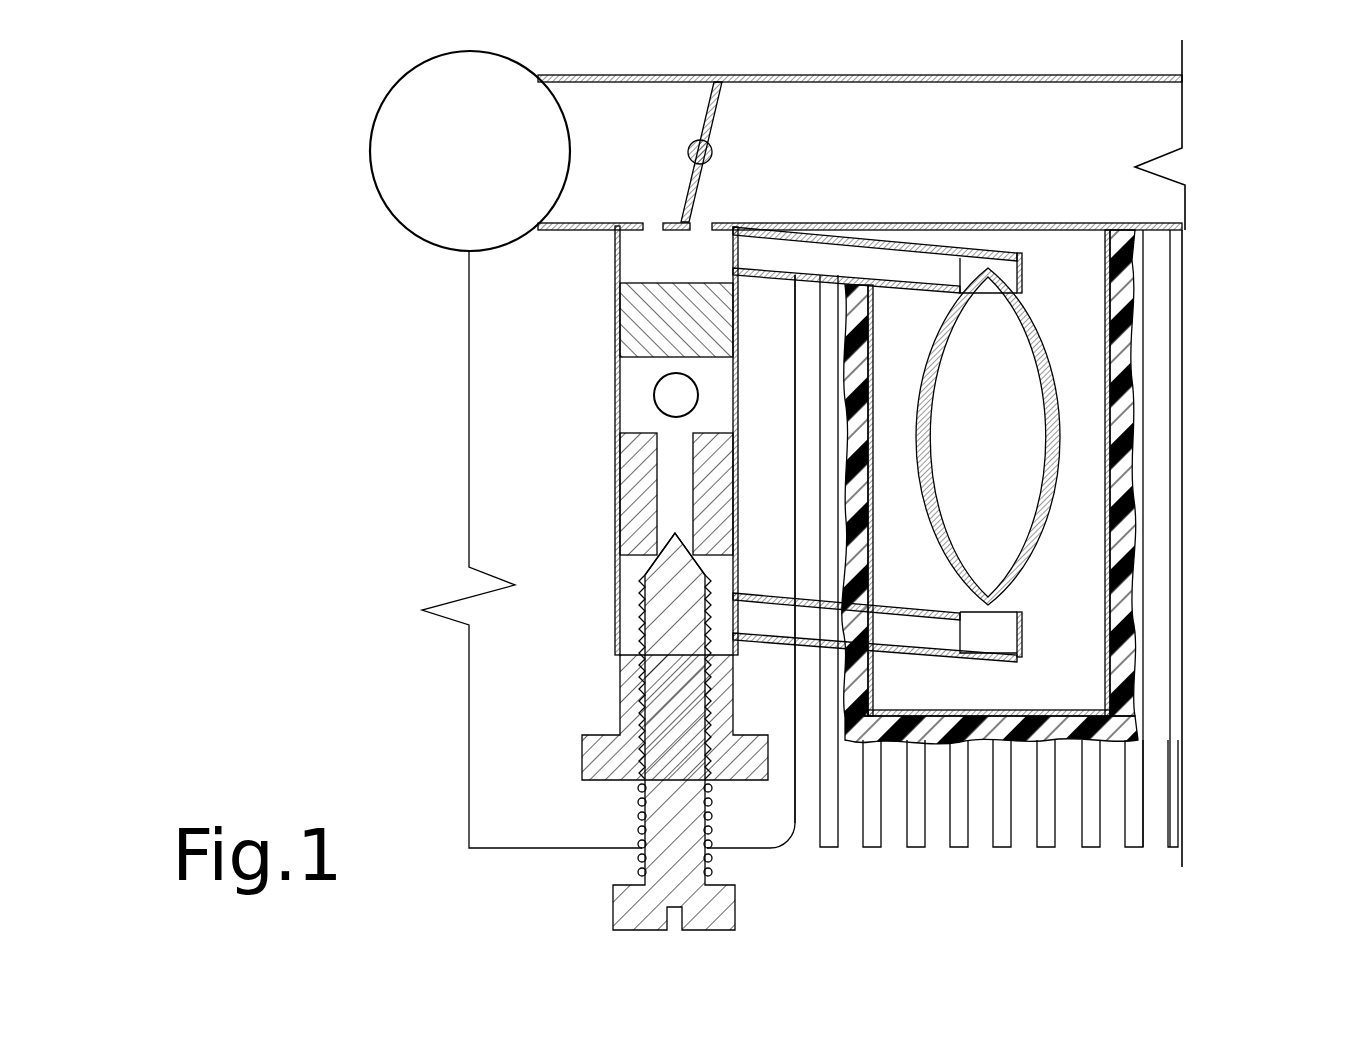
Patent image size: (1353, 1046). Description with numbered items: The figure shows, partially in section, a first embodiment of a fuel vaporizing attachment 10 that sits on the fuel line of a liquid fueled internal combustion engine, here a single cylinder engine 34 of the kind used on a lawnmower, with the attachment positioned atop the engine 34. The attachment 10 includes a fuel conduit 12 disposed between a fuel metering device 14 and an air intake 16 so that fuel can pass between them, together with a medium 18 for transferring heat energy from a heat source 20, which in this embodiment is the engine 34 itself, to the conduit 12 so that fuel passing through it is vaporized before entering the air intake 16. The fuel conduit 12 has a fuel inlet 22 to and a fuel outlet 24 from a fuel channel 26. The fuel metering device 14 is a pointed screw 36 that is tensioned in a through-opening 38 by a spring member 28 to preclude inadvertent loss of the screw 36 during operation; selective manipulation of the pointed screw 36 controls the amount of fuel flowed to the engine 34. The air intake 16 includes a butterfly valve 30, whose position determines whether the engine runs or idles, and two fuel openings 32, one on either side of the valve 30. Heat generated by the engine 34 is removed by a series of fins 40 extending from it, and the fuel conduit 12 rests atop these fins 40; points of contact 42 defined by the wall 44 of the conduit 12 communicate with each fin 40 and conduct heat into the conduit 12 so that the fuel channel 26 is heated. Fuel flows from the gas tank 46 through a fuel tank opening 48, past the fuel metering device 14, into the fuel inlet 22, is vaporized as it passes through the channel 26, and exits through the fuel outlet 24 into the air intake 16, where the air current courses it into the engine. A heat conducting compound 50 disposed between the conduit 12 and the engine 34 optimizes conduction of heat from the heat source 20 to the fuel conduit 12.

The fuel vaporizing attachment 10 is at (1243, 314).
The fuel conduit 12 is at (1093, 641).
The fuel metering device 14 is at (493, 700).
The air intake 16 is at (306, 125).
The medium 18 is at (1213, 466).
The heat source 20 is at (1209, 702).
The fuel inlet 22 is at (896, 662).
The fuel outlet 24 is at (1039, 269).
The fuel channel 26 is at (1018, 322).
The spring member 28 is at (712, 856).
The butterfly valve 30 is at (722, 100).
The fuel openings 32 is at (735, 193).
The engine 34 is at (1211, 803).
The pointed screw 36 is at (660, 598).
The through-opening 38 is at (589, 530).
The fins 40 is at (1002, 848).
The points of contact 42 is at (1218, 229).
The wall 44 is at (1130, 298).
The gas tank 46 is at (550, 319).
The fuel tank opening 48 is at (678, 394).
The heat conducting compound 50 is at (1130, 648).